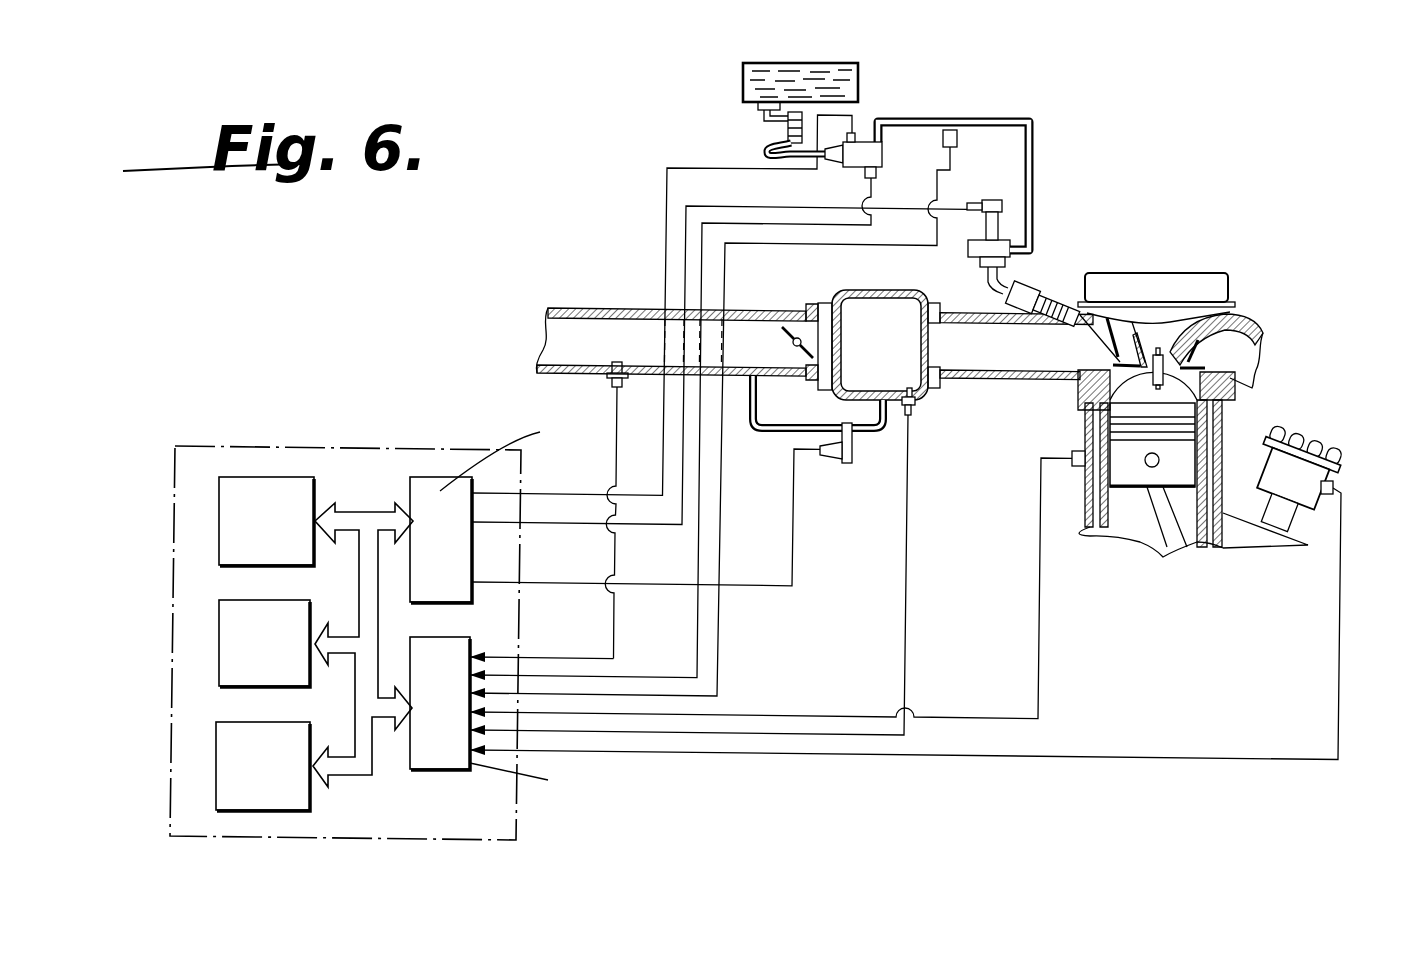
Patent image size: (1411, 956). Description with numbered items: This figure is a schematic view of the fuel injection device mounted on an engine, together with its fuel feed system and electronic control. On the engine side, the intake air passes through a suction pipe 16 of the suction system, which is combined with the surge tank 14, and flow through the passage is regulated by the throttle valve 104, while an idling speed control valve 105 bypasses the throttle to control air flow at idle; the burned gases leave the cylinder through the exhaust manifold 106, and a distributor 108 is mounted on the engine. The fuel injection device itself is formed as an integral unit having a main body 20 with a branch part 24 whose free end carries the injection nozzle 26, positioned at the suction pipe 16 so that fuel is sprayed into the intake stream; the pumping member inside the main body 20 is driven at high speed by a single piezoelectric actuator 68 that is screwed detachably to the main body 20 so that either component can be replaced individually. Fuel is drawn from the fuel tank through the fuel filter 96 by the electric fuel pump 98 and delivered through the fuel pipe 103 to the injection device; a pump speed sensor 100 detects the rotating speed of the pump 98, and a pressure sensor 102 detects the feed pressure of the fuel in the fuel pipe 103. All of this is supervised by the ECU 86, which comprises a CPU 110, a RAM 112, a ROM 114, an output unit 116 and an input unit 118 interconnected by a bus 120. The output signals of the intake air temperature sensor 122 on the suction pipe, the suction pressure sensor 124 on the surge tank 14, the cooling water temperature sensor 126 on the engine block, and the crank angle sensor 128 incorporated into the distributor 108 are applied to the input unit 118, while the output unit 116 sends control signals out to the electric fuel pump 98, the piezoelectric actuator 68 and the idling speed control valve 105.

The surge tank 14 is at (898, 281).
The suction pipe 16 is at (1020, 376).
The main body 20 is at (970, 252).
The branch part 24 is at (985, 290).
The injection nozzle 26 is at (1018, 284).
The piezoelectric actuator 68 is at (991, 198).
The ECU 86 is at (517, 813).
The fuel filter 96 is at (788, 128).
The electric fuel pump 98 is at (884, 157).
The pump speed sensor 100 is at (865, 174).
The pressure sensor 102 is at (987, 108).
The fuel pipe 103 is at (1036, 175).
The throttle valve 104 is at (793, 344).
The idling speed control valve 105 is at (853, 458).
The exhaust manifold 106 is at (1233, 330).
The distributor 108 is at (1318, 425).
The CPU 110 is at (318, 478).
The RAM 112 is at (312, 601).
The ROM 114 is at (311, 723).
The output unit 116 is at (448, 476).
The input unit 118 is at (452, 752).
The bus 120 is at (347, 772).
The intake air temperature sensor 122 is at (607, 380).
The suction pressure sensor 124 is at (911, 406).
The cooling water temperature sensor 126 is at (1082, 470).
The crank angle sensor 128 is at (1334, 487).